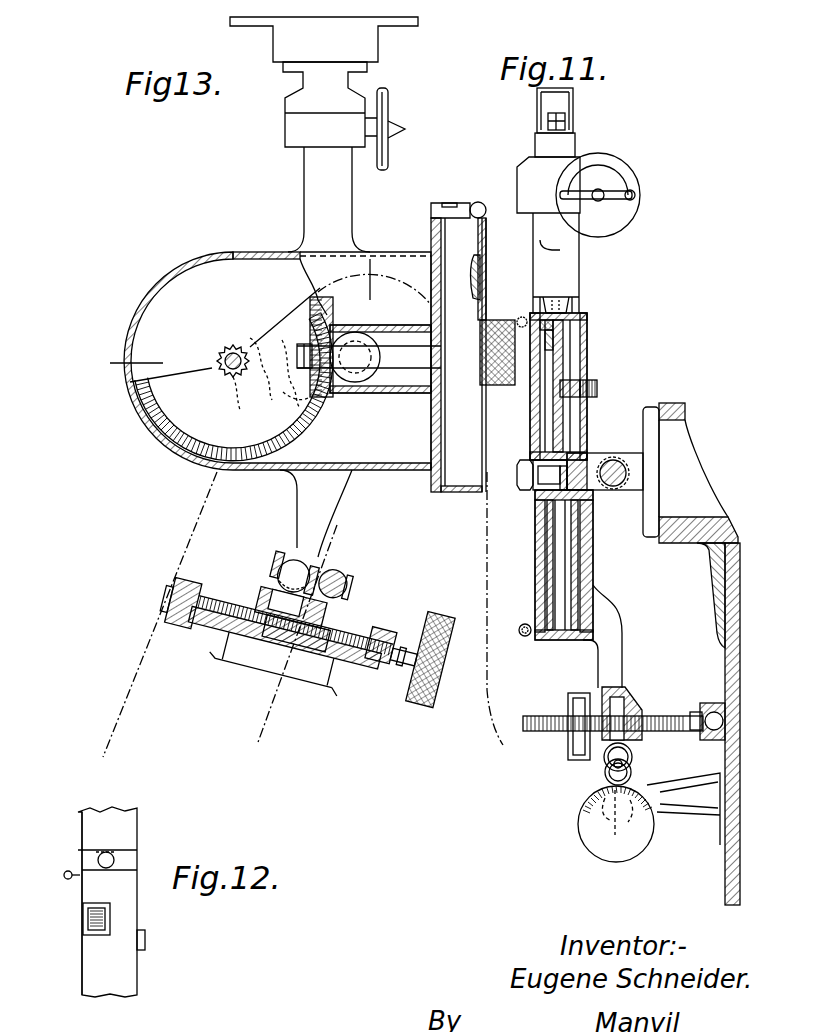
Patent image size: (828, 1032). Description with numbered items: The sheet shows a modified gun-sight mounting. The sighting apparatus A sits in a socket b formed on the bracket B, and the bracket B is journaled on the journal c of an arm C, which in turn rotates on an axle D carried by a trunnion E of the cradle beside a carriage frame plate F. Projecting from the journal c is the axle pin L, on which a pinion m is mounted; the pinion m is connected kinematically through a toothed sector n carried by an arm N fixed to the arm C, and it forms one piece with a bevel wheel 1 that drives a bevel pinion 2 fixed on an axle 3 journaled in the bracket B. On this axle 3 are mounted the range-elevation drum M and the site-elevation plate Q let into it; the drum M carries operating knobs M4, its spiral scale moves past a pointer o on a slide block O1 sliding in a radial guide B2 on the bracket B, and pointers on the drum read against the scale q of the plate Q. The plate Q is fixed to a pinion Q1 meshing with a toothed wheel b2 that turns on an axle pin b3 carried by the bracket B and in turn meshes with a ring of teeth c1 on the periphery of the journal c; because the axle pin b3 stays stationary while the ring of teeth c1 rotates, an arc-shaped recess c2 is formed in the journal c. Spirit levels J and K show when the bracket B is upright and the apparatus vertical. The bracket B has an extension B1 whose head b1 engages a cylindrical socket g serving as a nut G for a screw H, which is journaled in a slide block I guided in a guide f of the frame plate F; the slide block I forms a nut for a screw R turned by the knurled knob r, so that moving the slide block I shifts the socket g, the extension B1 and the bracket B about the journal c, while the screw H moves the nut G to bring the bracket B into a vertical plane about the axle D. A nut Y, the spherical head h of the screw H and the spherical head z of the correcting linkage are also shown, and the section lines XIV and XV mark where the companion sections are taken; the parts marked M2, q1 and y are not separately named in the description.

In FIG. 13, the sighting apparatus A is at (292, 127).
In FIG. 11, the sighting apparatus A is at (528, 185).
In FIG. 13, the socket b is at (318, 188).
In FIG. 11, the socket b is at (562, 250).
In FIG. 12, the socket b is at (112, 831).
In FIG. 13, the bracket B is at (178, 277).
In FIG. 11, the bracket B is at (587, 427).
In FIG. 12, the bracket B is at (92, 960).
In FIG. 13, the bevel wheel 1 is at (187, 426).
In FIG. 13, the bevel pinion 2 is at (333, 334).
In FIG. 13, the axle 3 is at (393, 353).
In FIG. 13, the axle pin L is at (234, 352).
In FIG. 11, the axle pin L is at (542, 478).
In FIG. 13, the pinion m is at (214, 364).
In FIG. 13, the toothed sector n is at (236, 390).
In FIG. 13, the arm N is at (300, 401).
In FIG. 13, the journal c is at (372, 380).
In FIG. 11, the journal c is at (573, 350).
In FIG. 13, the extension B1 is at (327, 498).
In FIG. 11, the extension B1 is at (613, 638).
In FIG. 13, the head b1 is at (293, 574).
In FIG. 13, the cylindrical socket g is at (291, 586).
In FIG. 13, the slide block I is at (292, 618).
In FIG. 13, the nut G is at (333, 584).
In FIG. 13, the screw H is at (348, 587).
In FIG. 11, the screw H is at (663, 732).
In FIG. 13, the guide f is at (273, 641).
In FIG. 13, the screw R is at (393, 648).
In FIG. 11, the screw R is at (632, 771).
In FIG. 13, the knurled knob r is at (430, 660).
In FIG. 11, the knurled knob r is at (600, 835).
In FIG. 13, the carriage frame plate F is at (124, 700).
In FIG. 11, the carriage frame plate F is at (733, 856).
In FIG. 13, the section line XIV is at (188, 335).
In FIG. 13, the section line XV is at (317, 638).
In FIG. 11, the spirit level K is at (436, 203).
In FIG. 11, the spirit level J is at (479, 205).
In FIG. 12, the spirit level J is at (124, 860).
In FIG. 11, the radial guide B2 is at (487, 241).
In FIG. 11, the slide block O1 is at (480, 273).
In FIG. 11, the range-elevation drum M is at (441, 306).
In FIG. 12, the range-elevation drum M is at (90, 917).
In FIG. 11, the operating knob M4 is at (518, 655).
In FIG. 12, the operating knob M4 is at (64, 877).
In FIG. 11, the clamp block M2 is at (512, 386).
In FIG. 11, the site-elevation plate Q is at (557, 433).
In FIG. 11, the pinion Q1 is at (560, 510).
In FIG. 11, the scale q is at (537, 588).
In FIG. 11, the spring q1 is at (546, 365).
In FIG. 11, the toothed wheel b2 is at (587, 341).
In FIG. 11, the axle pin b3 is at (553, 413).
In FIG. 11, the ring of teeth c1 is at (580, 306).
In FIG. 11, the recess c2 is at (597, 373).
In FIG. 11, the trunnion E is at (670, 432).
In FIG. 11, the axle D is at (628, 466).
In FIG. 11, the arm C is at (596, 490).
In FIG. 11, the nut Y is at (628, 711).
In FIG. 11, the rack y is at (577, 695).
In FIG. 11, the spherical head h is at (713, 712).
In FIG. 11, the spherical head z is at (606, 762).
In FIG. 12, the pointer o is at (106, 921).